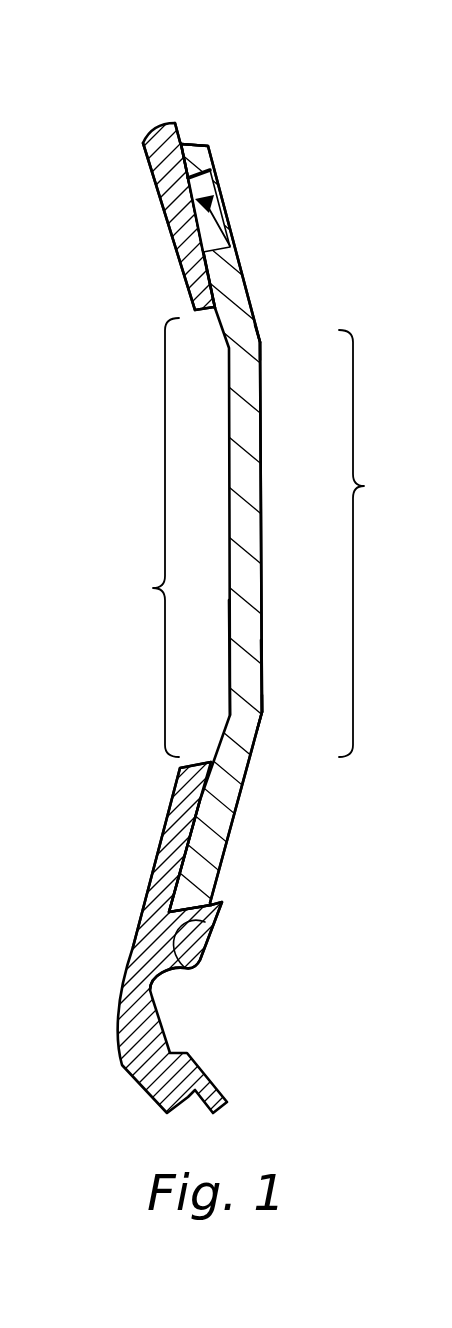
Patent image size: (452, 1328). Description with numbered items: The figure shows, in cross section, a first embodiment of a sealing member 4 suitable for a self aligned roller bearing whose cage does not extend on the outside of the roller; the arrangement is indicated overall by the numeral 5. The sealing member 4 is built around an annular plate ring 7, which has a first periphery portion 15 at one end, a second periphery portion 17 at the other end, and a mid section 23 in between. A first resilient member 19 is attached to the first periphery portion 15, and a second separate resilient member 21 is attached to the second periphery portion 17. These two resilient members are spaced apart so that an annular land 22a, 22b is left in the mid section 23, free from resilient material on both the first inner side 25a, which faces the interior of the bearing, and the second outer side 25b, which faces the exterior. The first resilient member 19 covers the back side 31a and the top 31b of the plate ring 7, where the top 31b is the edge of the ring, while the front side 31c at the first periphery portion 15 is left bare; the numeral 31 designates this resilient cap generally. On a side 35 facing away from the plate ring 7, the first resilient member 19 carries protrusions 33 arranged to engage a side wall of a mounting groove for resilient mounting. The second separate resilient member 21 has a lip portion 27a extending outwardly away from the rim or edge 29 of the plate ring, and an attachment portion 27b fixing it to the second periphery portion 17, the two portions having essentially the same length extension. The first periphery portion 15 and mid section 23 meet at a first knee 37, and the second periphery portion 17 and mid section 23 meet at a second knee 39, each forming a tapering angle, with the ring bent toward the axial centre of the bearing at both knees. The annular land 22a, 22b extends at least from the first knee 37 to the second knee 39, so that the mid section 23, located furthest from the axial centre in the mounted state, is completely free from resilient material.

The sealing member 4 is at (211, 426).
The board assembly 5 is at (196, 98).
The annular plate ring 7 is at (262, 535).
The first periphery portion 15 is at (318, 162).
The second periphery portion 17 is at (252, 770).
The first resilient member 19 is at (183, 140).
The second separate resilient member 21 is at (205, 942).
The annular land 22a is at (138, 537).
The annular land 22b is at (378, 543).
The mid section 23 is at (258, 632).
The first inner side 25a is at (222, 668).
The second outer side 25b is at (280, 688).
The lip portion 27a is at (116, 907).
The attachment portion 27b is at (132, 767).
The rim or edge 29 is at (190, 975).
The cap 31 is at (147, 138).
The back side 31a is at (197, 247).
The top 31b is at (196, 160).
The front side 31c is at (193, 208).
The protrusions 33 is at (170, 237).
The side 35 is at (172, 192).
The first knee 37 is at (259, 336).
The second knee 39 is at (263, 711).